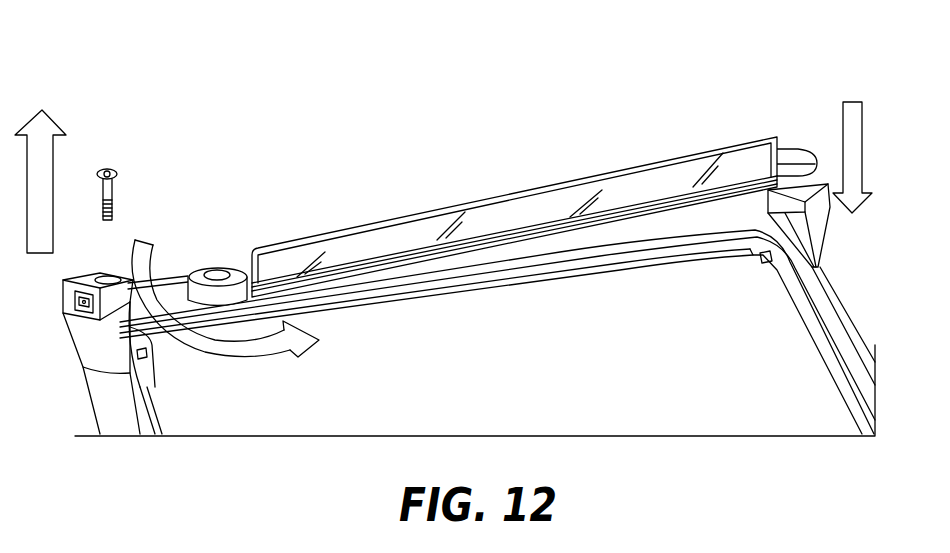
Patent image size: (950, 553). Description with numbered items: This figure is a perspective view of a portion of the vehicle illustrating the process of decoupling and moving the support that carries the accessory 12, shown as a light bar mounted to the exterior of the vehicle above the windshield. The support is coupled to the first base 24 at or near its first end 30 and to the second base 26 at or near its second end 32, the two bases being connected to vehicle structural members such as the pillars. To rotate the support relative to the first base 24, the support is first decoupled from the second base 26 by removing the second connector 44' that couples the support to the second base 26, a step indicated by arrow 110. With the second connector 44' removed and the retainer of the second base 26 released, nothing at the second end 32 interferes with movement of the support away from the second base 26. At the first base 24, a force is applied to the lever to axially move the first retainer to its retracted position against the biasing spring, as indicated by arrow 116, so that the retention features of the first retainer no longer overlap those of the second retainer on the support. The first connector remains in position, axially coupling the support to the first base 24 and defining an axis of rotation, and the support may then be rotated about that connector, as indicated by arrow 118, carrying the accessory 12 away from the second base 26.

The accessory 12 is at (641, 161).
The first base 24 is at (814, 112).
The second base 26 is at (138, 232).
The first end 30 is at (817, 164).
The second end 32 is at (190, 292).
The second connector 44' is at (126, 174).
The arrow 110 is at (50, 153).
The arrow 116 is at (858, 118).
The arrow 118 is at (248, 354).